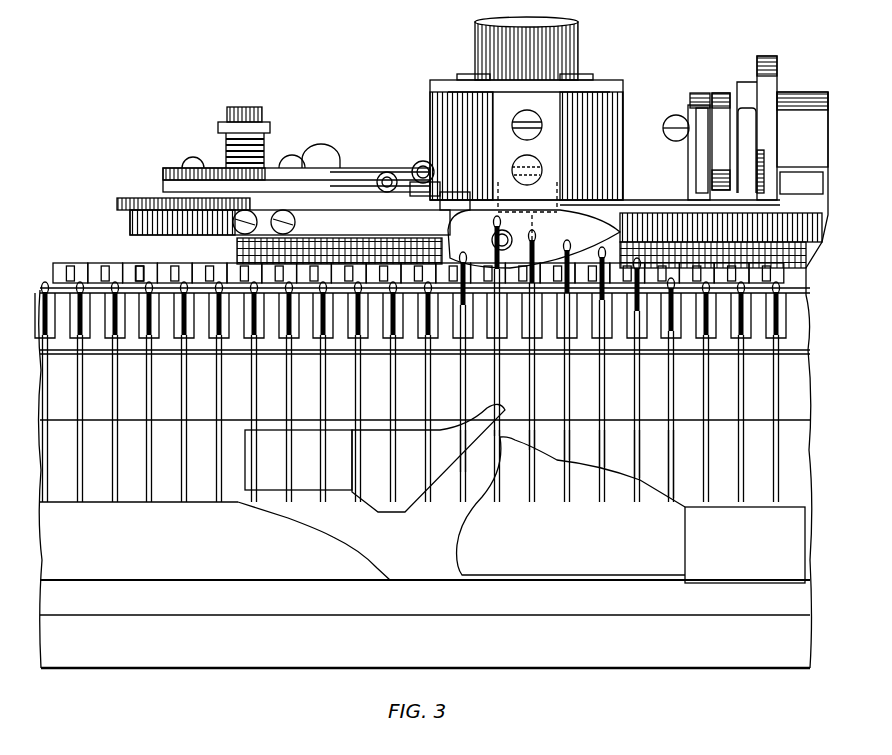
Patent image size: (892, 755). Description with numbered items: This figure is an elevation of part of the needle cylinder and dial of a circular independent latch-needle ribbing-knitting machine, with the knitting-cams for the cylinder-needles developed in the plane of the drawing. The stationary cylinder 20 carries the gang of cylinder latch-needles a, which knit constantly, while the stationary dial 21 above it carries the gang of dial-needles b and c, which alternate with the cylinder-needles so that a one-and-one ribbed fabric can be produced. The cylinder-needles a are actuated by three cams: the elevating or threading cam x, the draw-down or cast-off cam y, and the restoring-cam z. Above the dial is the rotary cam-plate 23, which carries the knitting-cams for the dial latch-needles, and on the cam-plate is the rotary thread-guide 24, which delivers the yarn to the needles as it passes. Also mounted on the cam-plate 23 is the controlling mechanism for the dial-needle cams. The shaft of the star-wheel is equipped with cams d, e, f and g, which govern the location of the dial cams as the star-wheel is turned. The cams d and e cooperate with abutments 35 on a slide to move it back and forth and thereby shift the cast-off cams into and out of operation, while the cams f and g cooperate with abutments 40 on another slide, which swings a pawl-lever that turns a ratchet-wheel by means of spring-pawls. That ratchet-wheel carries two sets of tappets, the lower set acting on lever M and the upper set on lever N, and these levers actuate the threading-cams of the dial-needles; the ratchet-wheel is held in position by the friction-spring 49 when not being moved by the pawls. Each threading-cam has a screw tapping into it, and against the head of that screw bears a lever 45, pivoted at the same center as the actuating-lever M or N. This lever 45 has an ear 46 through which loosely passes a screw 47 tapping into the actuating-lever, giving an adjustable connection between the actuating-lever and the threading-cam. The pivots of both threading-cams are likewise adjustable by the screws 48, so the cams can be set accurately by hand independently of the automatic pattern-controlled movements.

The cylinder 20 is at (442, 573).
The dial 21 is at (182, 272).
The cam-plate 23 is at (130, 220).
The thread-guide 24 is at (536, 240).
The abutments 35 is at (748, 142).
The abutments 40 is at (698, 173).
The lever 45 is at (345, 205).
The ear 46 is at (386, 172).
The screw 47 is at (420, 162).
The screws 48 is at (296, 222).
The friction-spring 49 is at (228, 142).
The cylinder latch-needles a is at (46, 286).
The dial-needles b is at (97, 266).
The dial-needles c is at (136, 266).
The cam d is at (770, 57).
The cam e is at (745, 103).
The cam f is at (716, 107).
The cam g is at (692, 93).
The lever M is at (163, 187).
The lever N is at (345, 175).
The elevating or threading cam x is at (571, 506).
The draw-down or cast-off cam y is at (375, 458).
The restoring-cam z is at (314, 541).